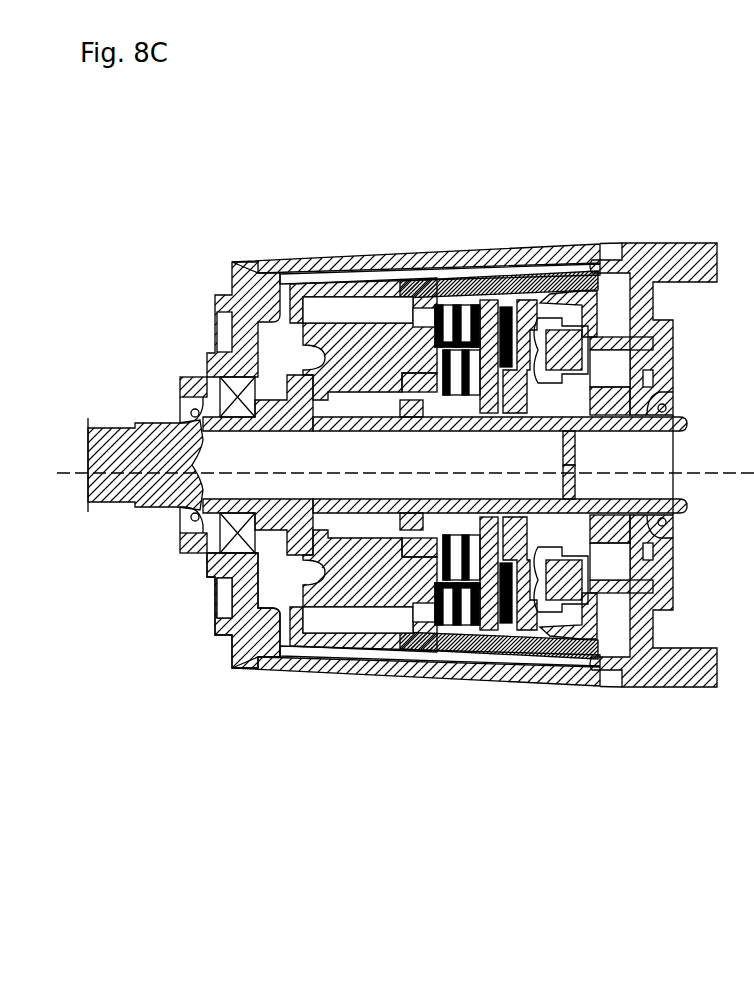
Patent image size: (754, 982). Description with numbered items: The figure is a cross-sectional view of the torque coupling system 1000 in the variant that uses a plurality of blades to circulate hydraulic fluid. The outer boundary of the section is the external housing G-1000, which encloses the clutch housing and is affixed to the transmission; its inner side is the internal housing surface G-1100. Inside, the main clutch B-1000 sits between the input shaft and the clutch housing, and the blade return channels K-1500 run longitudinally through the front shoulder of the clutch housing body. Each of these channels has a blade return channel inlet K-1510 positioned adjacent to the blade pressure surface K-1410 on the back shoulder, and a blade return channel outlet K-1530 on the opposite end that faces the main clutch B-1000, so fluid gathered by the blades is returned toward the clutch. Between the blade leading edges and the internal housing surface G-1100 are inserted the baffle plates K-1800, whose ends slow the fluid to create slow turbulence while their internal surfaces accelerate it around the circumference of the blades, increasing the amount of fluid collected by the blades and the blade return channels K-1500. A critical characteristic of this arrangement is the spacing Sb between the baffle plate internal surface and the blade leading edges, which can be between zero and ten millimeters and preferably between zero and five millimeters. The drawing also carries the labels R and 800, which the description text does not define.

The torque coupling system 1000 is at (570, 156).
The external housing G-1000 is at (233, 274).
The internal housing surface G-1100 is at (357, 252).
The main clutch B-1000 is at (455, 250).
The rotor shaft R is at (83, 473).
The spacing Sb is at (379, 558).
The flange 800 is at (140, 648).
The blade pressure surface K-1410 is at (405, 631).
The baffle plates K-1800 is at (332, 642).
The blade return channels K-1500 is at (597, 783).
The blade return channel inlet K-1510 is at (421, 620).
The blade return channel outlet K-1530 is at (443, 628).